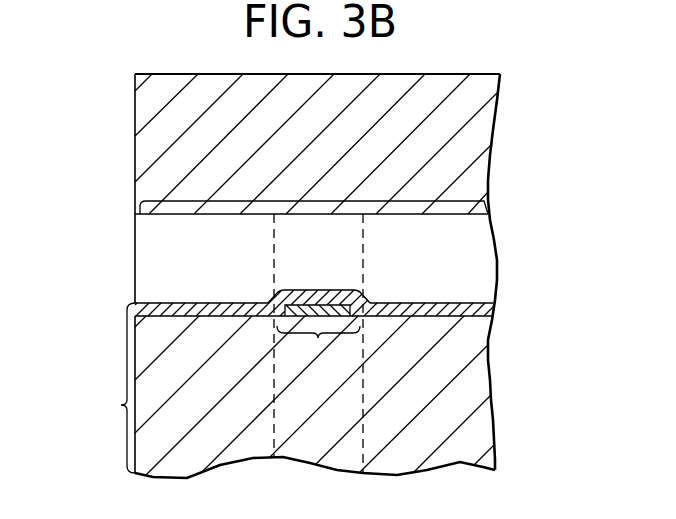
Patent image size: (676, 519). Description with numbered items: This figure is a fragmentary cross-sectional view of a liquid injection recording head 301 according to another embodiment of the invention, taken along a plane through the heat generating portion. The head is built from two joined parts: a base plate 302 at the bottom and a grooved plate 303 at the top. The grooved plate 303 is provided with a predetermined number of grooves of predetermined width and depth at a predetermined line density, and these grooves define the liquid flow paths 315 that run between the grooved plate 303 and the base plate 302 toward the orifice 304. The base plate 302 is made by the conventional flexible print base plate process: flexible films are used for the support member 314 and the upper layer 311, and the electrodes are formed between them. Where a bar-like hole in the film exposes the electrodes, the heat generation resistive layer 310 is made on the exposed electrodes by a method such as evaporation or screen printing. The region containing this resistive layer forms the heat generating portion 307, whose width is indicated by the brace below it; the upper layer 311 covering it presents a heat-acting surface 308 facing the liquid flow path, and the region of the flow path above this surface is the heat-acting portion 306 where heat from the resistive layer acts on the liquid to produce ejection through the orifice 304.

The liquid injection recording head 301 is at (512, 106).
The base plate 302 is at (102, 388).
The grooved plate 303 is at (470, 145).
The orifice 304 is at (148, 252).
The heat-acting portion 306 is at (352, 240).
The heat generating portion 307 is at (318, 346).
The heat-acting surface 308 is at (305, 290).
The heat generation resistive layer 310 is at (332, 305).
The upper layer 311 is at (483, 310).
The support member 314 is at (472, 396).
The liquid flow paths 315 is at (313, 201).